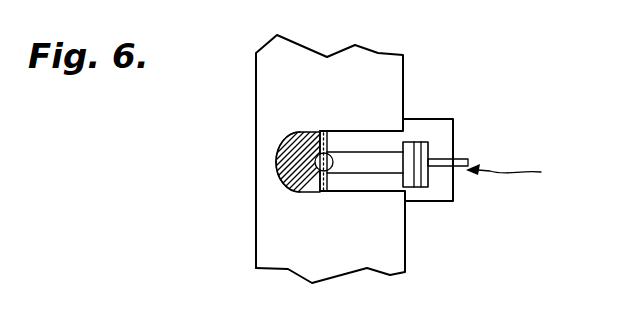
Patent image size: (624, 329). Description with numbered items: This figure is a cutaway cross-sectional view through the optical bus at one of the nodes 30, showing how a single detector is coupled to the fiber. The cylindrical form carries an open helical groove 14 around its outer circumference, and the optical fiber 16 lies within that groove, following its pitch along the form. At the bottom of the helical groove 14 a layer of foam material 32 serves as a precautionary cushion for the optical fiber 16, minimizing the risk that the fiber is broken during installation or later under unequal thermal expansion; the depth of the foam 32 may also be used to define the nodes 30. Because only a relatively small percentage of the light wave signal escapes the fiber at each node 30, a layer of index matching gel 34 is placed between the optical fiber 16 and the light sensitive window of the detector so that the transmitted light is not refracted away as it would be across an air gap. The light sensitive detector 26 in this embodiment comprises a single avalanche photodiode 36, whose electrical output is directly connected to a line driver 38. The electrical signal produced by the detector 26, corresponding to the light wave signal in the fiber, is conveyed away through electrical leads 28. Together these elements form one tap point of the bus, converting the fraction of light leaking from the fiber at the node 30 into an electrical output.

The helical groove 14 is at (362, 200).
The optical fiber 16 is at (303, 170).
The node 30 is at (278, 153).
The foam material 32 is at (298, 192).
The index matching gel 34 is at (326, 134).
The avalanche photodiode 36 is at (382, 165).
The line driver 38 is at (424, 143).
The electrical leads 28 is at (443, 153).
The light sensitive detector 26 is at (519, 173).